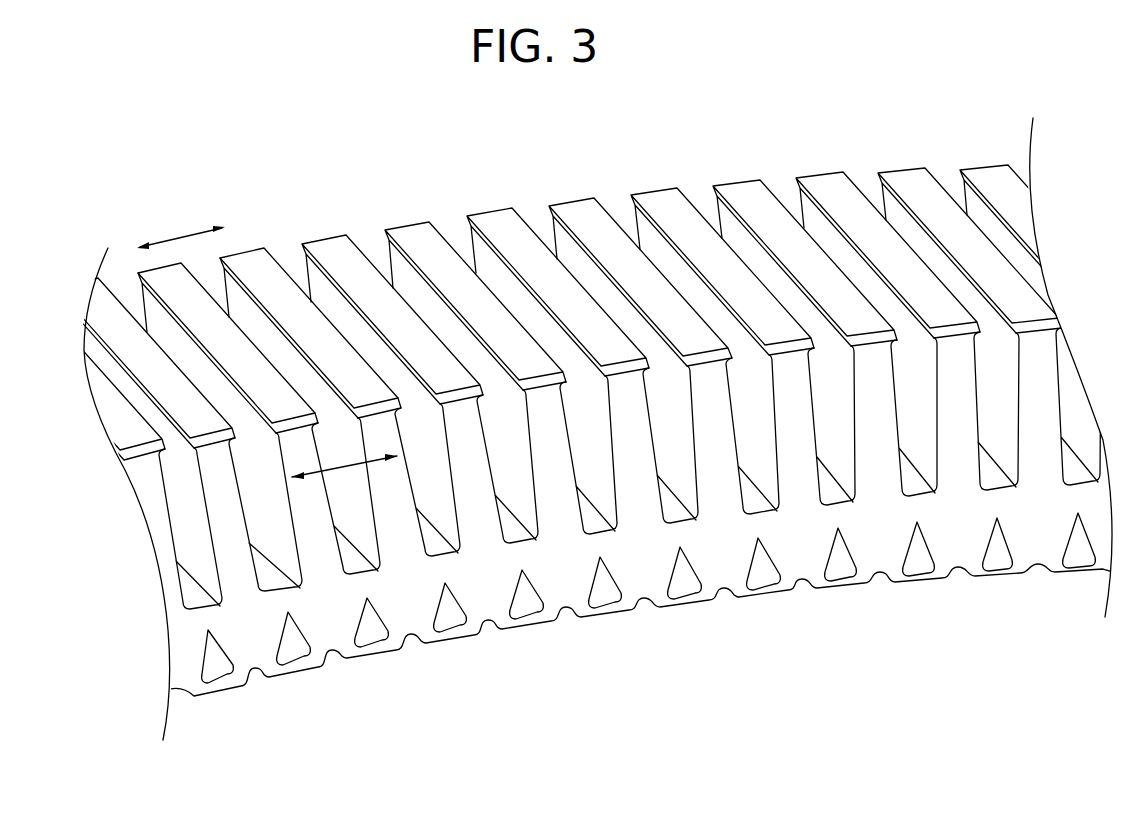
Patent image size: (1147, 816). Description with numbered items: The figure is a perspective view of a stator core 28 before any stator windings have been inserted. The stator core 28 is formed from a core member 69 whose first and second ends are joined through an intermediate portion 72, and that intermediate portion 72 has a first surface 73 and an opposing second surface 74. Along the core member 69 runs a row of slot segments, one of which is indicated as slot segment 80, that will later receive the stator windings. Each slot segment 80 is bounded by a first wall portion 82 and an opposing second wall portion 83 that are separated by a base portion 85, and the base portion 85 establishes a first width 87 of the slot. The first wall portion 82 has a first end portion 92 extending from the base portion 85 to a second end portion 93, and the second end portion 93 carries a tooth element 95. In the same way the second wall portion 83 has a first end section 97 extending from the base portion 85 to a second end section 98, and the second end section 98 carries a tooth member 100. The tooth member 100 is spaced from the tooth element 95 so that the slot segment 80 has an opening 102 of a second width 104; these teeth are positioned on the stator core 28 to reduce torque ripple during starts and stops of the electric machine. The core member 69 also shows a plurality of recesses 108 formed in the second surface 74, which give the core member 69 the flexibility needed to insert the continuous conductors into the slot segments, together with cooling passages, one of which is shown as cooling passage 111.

The stator core 28 is at (972, 651).
The core member 69 is at (548, 635).
The intermediate portion 72 is at (708, 566).
The first surface 73 is at (422, 233).
The second surface 74 is at (462, 644).
The slot segment 80 is at (262, 316).
The first wall portion 82 is at (380, 570).
The second wall portion 83 is at (298, 400).
The base portion 85 is at (358, 560).
The first width 87 is at (346, 470).
The first end portion 92 is at (350, 572).
The second end portion 93 is at (312, 424).
The tooth element 95 is at (312, 416).
The first end section 97 is at (371, 565).
The second end section 98 is at (363, 423).
The tooth member 100 is at (343, 428).
The opening 102 is at (244, 262).
The second width 104 is at (222, 257).
The recesses 108 is at (488, 628).
The cooling passage 111 is at (217, 677).